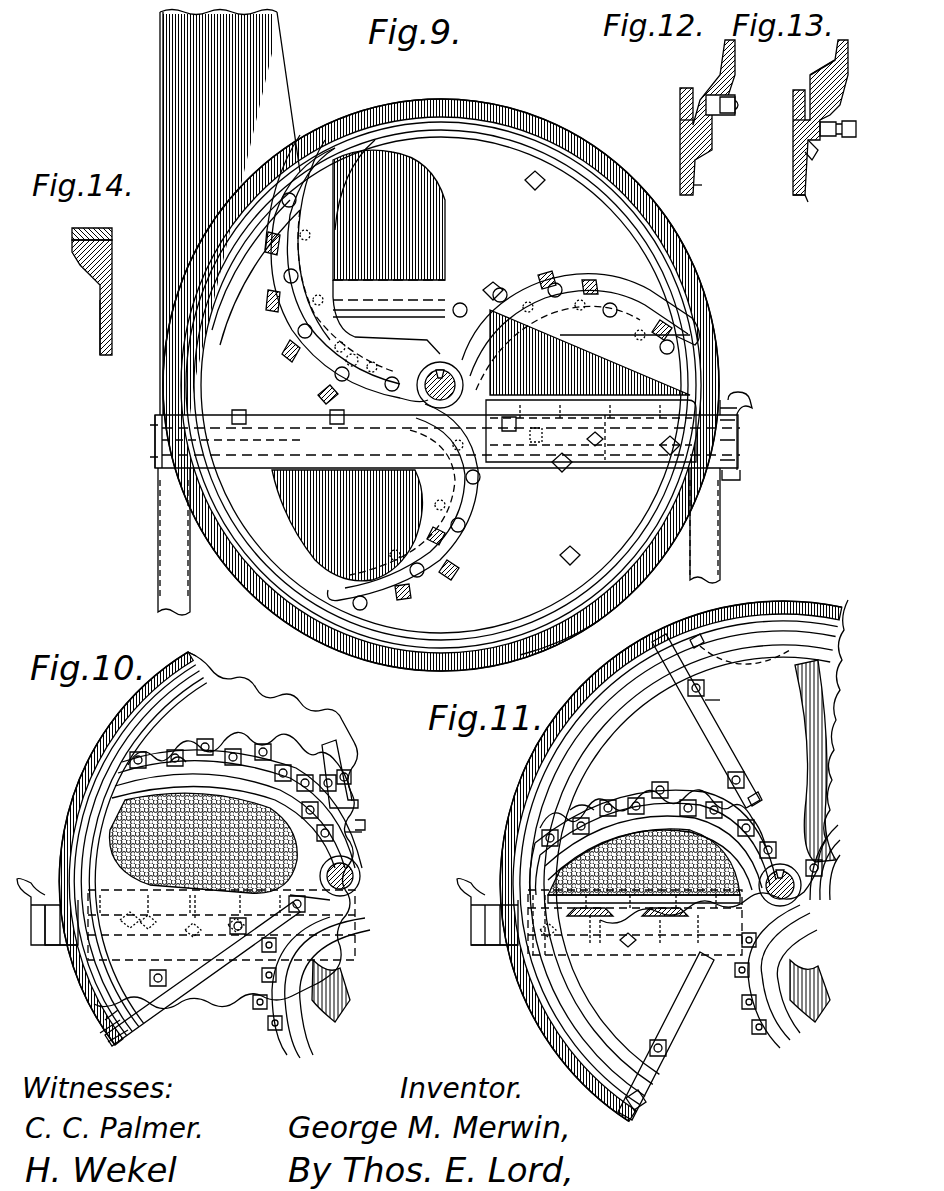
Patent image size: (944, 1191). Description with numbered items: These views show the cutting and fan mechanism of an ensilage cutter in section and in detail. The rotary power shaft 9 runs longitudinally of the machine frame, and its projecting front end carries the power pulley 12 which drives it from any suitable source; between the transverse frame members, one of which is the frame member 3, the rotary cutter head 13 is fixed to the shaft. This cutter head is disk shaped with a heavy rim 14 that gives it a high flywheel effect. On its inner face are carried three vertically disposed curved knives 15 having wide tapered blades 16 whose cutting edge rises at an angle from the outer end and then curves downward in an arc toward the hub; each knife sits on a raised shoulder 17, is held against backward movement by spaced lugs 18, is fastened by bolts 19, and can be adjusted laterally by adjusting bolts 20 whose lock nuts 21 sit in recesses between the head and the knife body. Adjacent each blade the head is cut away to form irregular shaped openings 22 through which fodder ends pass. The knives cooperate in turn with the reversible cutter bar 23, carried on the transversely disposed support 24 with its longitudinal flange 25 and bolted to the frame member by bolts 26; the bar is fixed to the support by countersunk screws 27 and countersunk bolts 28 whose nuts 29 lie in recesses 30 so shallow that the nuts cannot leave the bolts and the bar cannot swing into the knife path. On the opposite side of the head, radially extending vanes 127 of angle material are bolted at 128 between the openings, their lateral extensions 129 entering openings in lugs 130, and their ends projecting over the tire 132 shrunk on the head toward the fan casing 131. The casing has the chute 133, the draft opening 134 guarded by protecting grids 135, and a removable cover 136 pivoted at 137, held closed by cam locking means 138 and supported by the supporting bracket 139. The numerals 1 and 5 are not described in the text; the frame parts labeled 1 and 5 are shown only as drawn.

In FIG. 9, the frame bar 1 is at (742, 447).
In FIG. 10, the frame bar 1 is at (50, 905).
In FIG. 11, the frame bar 1 is at (478, 950).
In FIG. 9, the transverse frame member 3 is at (158, 500).
In FIG. 10, the transverse frame member 3 is at (362, 955).
In FIG. 11, the transverse frame member 3 is at (792, 962).
In FIG. 9, the frame post 5 is at (160, 530).
In FIG. 9, the rotary power shaft 9 is at (405, 420).
In FIG. 10, the rotary power shaft 9 is at (355, 868).
In FIG. 11, the rotary power shaft 9 is at (800, 800).
In FIG. 9, the power pulley 12 is at (602, 258).
In FIG. 9, the rotary cutter head 13 is at (176, 368).
In FIG. 14, the rotary cutter head 13 is at (100, 318).
In FIG. 12, the rotary cutter head 13 is at (702, 58).
In FIG. 13, the rotary cutter head 13 is at (800, 85).
In FIG. 10, the rotary cutter head 13 is at (108, 735).
In FIG. 11, the rotary cutter head 13 is at (540, 990).
In FIG. 9, the heavy rim 14 is at (556, 152).
In FIG. 14, the heavy rim 14 is at (76, 256).
In FIG. 10, the heavy rim 14 is at (100, 830).
In FIG. 11, the heavy rim 14 is at (542, 820).
In FIG. 9, the curved cutters or knives 15 is at (324, 139).
In FIG. 12, the curved cutters or knives 15 is at (686, 148).
In FIG. 13, the curved cutters or knives 15 is at (795, 138).
In FIG. 10, the curved cutters or knives 15 is at (245, 775).
In FIG. 11, the curved cutters or knives 15 is at (816, 822).
In FIG. 9, the wide tapered blade 16 is at (376, 138).
In FIG. 12, the wide tapered blade 16 is at (700, 192).
In FIG. 13, the wide tapered blade 16 is at (803, 197).
In FIG. 10, the wide tapered blade 16 is at (118, 770).
In FIG. 11, the wide tapered blade 16 is at (790, 842).
In FIG. 9, the raised shoulder 17 is at (301, 135).
In FIG. 9, the spaced lugs 18 is at (575, 283).
In FIG. 13, the spaced lugs 18 is at (822, 61).
In FIG. 9, the bolts 19 is at (592, 290).
In FIG. 12, the bolts 19 is at (690, 104).
In FIG. 10, the bolts 19 is at (150, 752).
In FIG. 11, the bolts 19 is at (665, 780).
In FIG. 9, the adjusting bolts 20 is at (372, 362).
In FIG. 13, the adjusting bolts 20 is at (845, 140).
In FIG. 10, the adjusting bolts 20 is at (178, 757).
In FIG. 11, the adjusting bolts 20 is at (582, 824).
In FIG. 13, the lock nuts 21 is at (814, 160).
In FIG. 9, the irregular shaped openings 22 is at (420, 144).
In FIG. 10, the irregular shaped openings 22 is at (112, 850).
In FIG. 11, the irregular shaped openings 22 is at (552, 842).
In FIG. 9, the reversible cutter bar 23 is at (610, 456).
In FIG. 10, the reversible cutter bar 23 is at (92, 970).
In FIG. 11, the reversible cutter bar 23 is at (512, 960).
In FIG. 9, the transversely disposed support 24 is at (714, 482).
In FIG. 10, the transversely disposed support 24 is at (112, 980).
In FIG. 11, the transversely disposed support 24 is at (532, 980).
In FIG. 11, the longitudinal flange 25 is at (522, 965).
In FIG. 9, the bolts 26 is at (716, 418).
In FIG. 10, the bolts 26 is at (185, 933).
In FIG. 11, the bolts 26 is at (628, 948).
In FIG. 9, the countersunk screws 27 is at (580, 452).
In FIG. 10, the countersunk screws 27 is at (110, 895).
In FIG. 11, the countersunk screws 27 is at (478, 935).
In FIG. 9, the countersunk bolts 28 is at (560, 452).
In FIG. 10, the countersunk bolts 28 is at (197, 920).
In FIG. 11, the countersunk bolts 28 is at (588, 945).
In FIG. 9, the nuts 29 is at (526, 460).
In FIG. 10, the nuts 29 is at (145, 926).
In FIG. 11, the nuts 29 is at (600, 950).
In FIG. 11, the recesses 30 is at (605, 945).
In FIG. 10, the radially extending vanes 127 is at (350, 755).
In FIG. 11, the radially extending vanes 127 is at (690, 722).
In FIG. 9, the bolts 128 is at (486, 289).
In FIG. 10, the bolts 128 is at (340, 778).
In FIG. 11, the bolts 128 is at (708, 700).
In FIG. 10, the lateral extensions 129 is at (366, 822).
In FIG. 11, the lateral extensions 129 is at (705, 660).
In FIG. 10, the lugs 130 is at (368, 833).
In FIG. 11, the lugs 130 is at (700, 640).
In FIG. 9, the fan casing 131 is at (398, 668).
In FIG. 10, the fan casing 131 is at (118, 718).
In FIG. 11, the fan casing 131 is at (808, 614).
In FIG. 9, the tire 132 is at (615, 627).
In FIG. 14, the tire 132 is at (80, 228).
In FIG. 10, the tire 132 is at (191, 662).
In FIG. 11, the tire 132 is at (626, 622).
In FIG. 9, the chute 133 is at (162, 36).
In FIG. 9, the draft opening 134 is at (208, 262).
In FIG. 9, the protecting grids 135 is at (412, 302).
In FIG. 9, the removable cover 136 is at (483, 124).
In FIG. 10, the removable cover 136 is at (120, 808).
In FIG. 11, the removable cover 136 is at (748, 615).
In FIG. 9, the pivot 137 is at (756, 412).
In FIG. 10, the pivot 137 is at (60, 890).
In FIG. 11, the pivot 137 is at (490, 898).
In FIG. 9, the cam locking means 138 is at (750, 427).
In FIG. 10, the supporting bracket 139 is at (82, 966).
In FIG. 11, the supporting bracket 139 is at (480, 910).